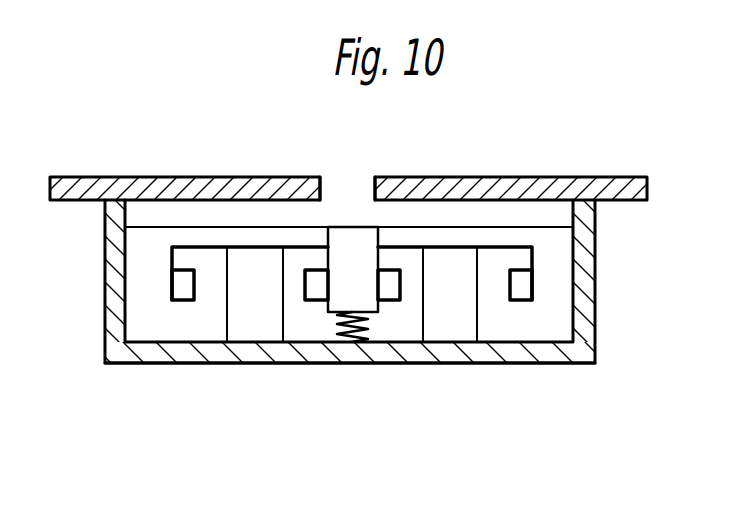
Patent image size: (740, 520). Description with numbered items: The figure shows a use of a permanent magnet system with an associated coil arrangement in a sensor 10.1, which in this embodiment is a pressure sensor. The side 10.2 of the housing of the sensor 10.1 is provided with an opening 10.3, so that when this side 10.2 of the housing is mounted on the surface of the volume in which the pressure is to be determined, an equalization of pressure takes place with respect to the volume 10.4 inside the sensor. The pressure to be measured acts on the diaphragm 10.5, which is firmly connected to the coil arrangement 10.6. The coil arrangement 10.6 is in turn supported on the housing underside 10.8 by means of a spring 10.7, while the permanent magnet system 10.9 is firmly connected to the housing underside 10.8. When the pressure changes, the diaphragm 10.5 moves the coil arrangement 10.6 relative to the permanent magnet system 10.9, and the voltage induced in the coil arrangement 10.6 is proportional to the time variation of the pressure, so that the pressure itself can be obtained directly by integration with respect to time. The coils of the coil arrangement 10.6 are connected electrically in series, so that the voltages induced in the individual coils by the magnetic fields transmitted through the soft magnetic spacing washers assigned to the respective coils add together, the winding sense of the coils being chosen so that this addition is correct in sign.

The sensor 10.1 is at (567, 302).
The side of the housing 10.2 is at (233, 190).
The opening 10.3 is at (345, 183).
The volume 10.4 is at (132, 218).
The diaphragm 10.5 is at (553, 223).
The coil arrangement 10.6 is at (183, 303).
The spring 10.7 is at (348, 342).
The housing underside 10.8 is at (562, 347).
The permanent magnet system 10.9 is at (267, 332).